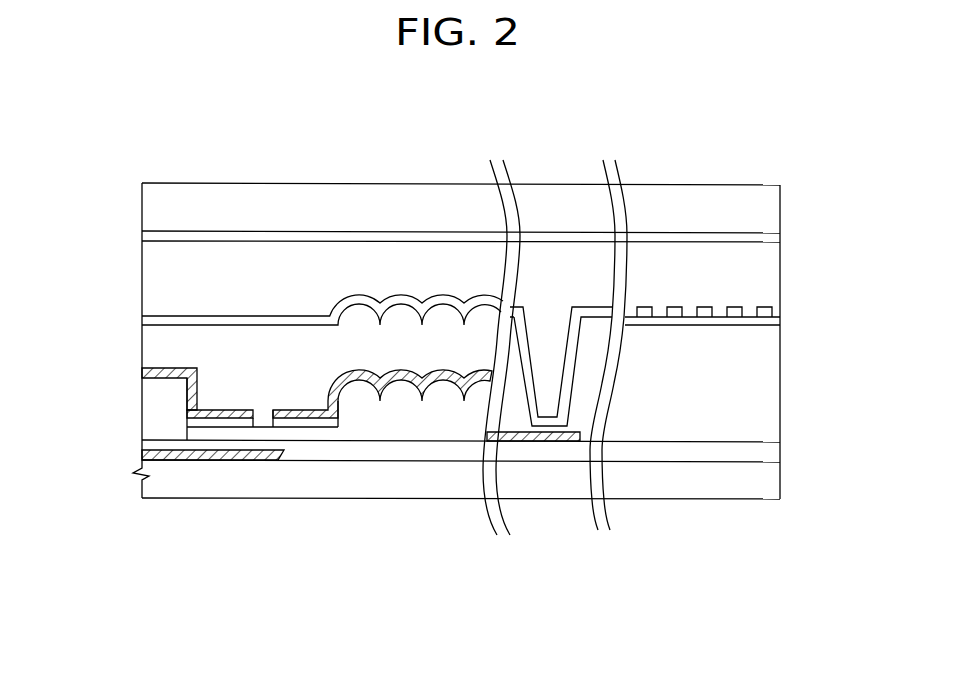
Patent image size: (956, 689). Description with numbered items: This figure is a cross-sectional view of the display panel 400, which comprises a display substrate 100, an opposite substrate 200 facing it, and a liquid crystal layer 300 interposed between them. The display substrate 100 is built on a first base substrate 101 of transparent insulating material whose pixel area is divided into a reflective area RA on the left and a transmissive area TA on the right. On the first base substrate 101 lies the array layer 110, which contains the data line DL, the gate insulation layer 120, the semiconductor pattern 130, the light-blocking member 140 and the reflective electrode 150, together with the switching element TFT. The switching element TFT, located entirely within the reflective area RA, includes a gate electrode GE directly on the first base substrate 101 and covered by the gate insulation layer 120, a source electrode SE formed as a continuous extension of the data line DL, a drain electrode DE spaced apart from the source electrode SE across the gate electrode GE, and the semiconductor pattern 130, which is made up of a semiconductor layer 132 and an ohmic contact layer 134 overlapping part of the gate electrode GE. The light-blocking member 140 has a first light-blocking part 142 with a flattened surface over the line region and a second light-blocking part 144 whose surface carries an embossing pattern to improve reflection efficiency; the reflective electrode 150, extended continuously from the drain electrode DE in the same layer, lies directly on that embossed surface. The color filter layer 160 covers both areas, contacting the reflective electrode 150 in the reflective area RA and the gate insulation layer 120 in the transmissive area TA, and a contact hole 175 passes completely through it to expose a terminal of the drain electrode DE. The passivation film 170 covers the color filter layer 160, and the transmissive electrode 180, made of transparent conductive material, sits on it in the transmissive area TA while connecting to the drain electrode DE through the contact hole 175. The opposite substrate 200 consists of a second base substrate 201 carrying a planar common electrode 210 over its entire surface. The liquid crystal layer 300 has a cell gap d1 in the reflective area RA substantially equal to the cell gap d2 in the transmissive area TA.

The display panel 400 is at (167, 128).
The display substrate 100 is at (77, 317).
The first base substrate 101 is at (510, 487).
The array layer 110 is at (126, 368).
The gate insulation layer 120 is at (763, 450).
The semiconductor pattern 130 is at (395, 553).
The semiconductor layer 132 is at (325, 437).
The ohmic contact layer 134 is at (340, 430).
The light-blocking member 140 is at (292, 135).
The first light-blocking part 142 is at (181, 410).
The second light-blocking part 144 is at (350, 412).
The reflective electrode 150 is at (464, 378).
The color filter layer 160 is at (652, 410).
The passivation film 170 is at (358, 300).
The contact hole 175 is at (552, 352).
The transmissive electrode 180 is at (588, 312).
The opposite substrate 200 is at (126, 184).
The second base substrate 201 is at (691, 197).
The common electrode 210 is at (648, 244).
The liquid crystal layer 300 is at (126, 246).
The data line DL is at (153, 378).
The source electrode SE is at (235, 417).
The gate electrode GE is at (273, 457).
The drain electrode DE is at (300, 418).
The switching element TFT is at (310, 550).
The reflective area RA is at (142, 500).
The transmissive area TA is at (790, 507).
The cell gap d1 is at (165, 243).
The cell gap d2 is at (688, 243).